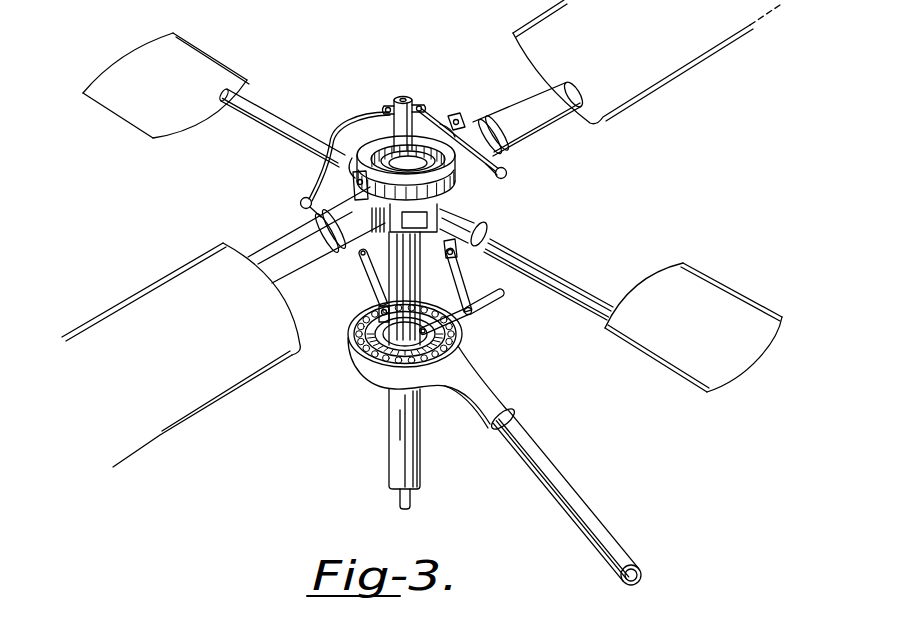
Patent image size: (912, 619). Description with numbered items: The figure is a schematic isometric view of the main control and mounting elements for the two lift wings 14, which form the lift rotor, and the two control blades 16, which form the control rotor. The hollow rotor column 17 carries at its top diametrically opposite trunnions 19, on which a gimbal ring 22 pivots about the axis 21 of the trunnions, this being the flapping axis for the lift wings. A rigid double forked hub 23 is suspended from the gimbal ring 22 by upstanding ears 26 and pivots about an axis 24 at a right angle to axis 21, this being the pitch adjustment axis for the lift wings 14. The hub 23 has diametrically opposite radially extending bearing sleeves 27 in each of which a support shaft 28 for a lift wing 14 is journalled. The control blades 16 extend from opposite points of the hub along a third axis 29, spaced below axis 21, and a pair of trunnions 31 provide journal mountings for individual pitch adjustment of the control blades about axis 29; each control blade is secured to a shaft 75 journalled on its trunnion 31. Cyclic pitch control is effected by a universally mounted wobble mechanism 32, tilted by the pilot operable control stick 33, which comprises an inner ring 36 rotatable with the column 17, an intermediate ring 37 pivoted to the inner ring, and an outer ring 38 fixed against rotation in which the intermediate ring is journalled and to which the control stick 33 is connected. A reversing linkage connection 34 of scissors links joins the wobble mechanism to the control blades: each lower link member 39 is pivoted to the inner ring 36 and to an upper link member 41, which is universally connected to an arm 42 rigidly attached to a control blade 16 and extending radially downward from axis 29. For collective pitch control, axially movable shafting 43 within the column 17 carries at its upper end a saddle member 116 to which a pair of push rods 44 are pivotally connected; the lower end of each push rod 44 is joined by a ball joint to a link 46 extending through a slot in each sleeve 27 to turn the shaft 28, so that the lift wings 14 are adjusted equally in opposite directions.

The lift wing 14 is at (145, 298).
The control blade 16 is at (140, 113).
The rotor column 17 is at (410, 452).
The trunnions 19 is at (421, 148).
The axis of the trunnions 21 is at (357, 145).
The gimbal ring 22 is at (478, 215).
The hub 23 is at (404, 218).
The axis 24 is at (354, 184).
The upstanding ears 26 is at (438, 140).
The bearing sleeves 27 is at (502, 144).
The support shaft 28 is at (538, 97).
The third axis 29 is at (342, 130).
The trunnions 31 is at (443, 235).
The wobble mechanism 32 is at (374, 374).
The control stick 33 is at (602, 543).
The reversing linkage connection 34 is at (472, 325).
The inner ring 36 is at (395, 346).
The intermediate ring 37 is at (363, 345).
The outer ring 38 is at (458, 341).
The lower link member 39 is at (372, 287).
The upper link member 41 is at (464, 273).
The arm 42 is at (444, 275).
The axially movable shafting 43 is at (412, 498).
The push rods 44 is at (499, 117).
The link 46 is at (302, 210).
The shaft 75 is at (257, 116).
The saddle member 116 is at (404, 96).